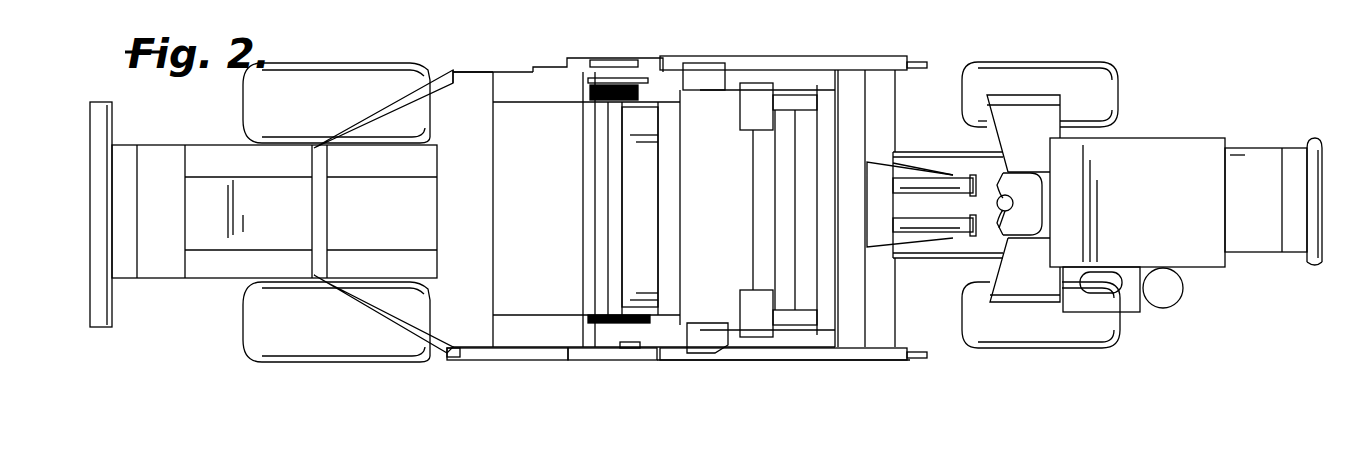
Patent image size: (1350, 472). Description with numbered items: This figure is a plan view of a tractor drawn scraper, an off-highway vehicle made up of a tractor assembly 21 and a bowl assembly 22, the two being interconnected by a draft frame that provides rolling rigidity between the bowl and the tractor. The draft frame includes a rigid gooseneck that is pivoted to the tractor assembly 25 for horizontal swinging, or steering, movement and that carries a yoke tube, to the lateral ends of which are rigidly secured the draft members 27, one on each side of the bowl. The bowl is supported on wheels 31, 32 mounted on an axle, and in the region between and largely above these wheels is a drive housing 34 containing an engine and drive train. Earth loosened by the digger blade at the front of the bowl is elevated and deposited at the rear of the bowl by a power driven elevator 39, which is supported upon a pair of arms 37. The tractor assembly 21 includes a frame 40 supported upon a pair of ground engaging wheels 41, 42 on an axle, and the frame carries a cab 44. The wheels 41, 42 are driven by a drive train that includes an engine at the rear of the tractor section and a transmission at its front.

The tractor assembly 21 is at (1150, 212).
The bowl assembly 22 is at (588, 360).
The tractor assembly pivot 25 is at (996, 226).
The draft members 27 is at (845, 40).
The wheel 31 is at (255, 329).
The wheel 32 is at (350, 82).
The drive housing 34 is at (400, 284).
The arms 37 is at (676, 70).
The elevator 39 is at (640, 84).
The frame 40 is at (1318, 150).
The ground engaging wheel 41 is at (994, 335).
The ground engaging wheel 42 is at (1073, 70).
The cab 44 is at (1212, 114).